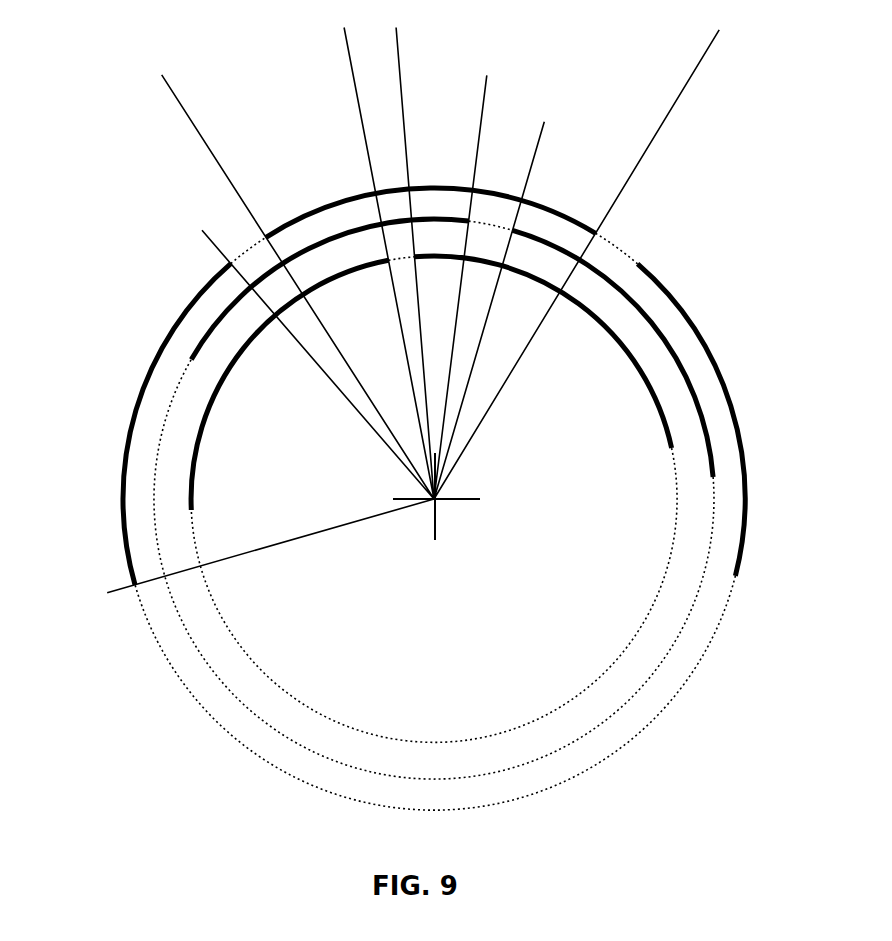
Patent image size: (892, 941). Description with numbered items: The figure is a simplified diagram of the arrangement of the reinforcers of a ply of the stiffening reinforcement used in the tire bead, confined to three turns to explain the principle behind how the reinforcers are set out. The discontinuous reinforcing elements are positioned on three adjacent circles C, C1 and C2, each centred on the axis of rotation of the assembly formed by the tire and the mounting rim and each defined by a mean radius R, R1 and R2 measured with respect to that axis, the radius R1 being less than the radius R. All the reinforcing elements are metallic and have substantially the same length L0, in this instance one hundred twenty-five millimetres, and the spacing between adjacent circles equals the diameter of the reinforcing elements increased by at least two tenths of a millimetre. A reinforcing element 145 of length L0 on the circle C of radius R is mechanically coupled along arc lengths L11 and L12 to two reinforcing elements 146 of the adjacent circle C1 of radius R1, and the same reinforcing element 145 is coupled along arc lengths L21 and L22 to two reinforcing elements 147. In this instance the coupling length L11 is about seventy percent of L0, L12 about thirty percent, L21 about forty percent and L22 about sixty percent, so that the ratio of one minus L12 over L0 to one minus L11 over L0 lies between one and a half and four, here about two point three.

The reinforcing element 145 is at (313, 213).
The reinforcing elements 146 is at (207, 343).
The reinforcing elements 147 is at (260, 340).
The circle C is at (170, 658).
The circle C1 is at (245, 708).
The circle C2 is at (327, 713).
The mean radius R is at (434, 499).
The mean radius R1 is at (434, 499).
The mean radius R2 is at (434, 499).
The length of reinforcing elements L0 is at (220, 252).
The arc length L11 is at (480, 129).
The arc length L12 is at (532, 163).
The arc length L21 is at (195, 127).
The arc length L22 is at (398, 46).